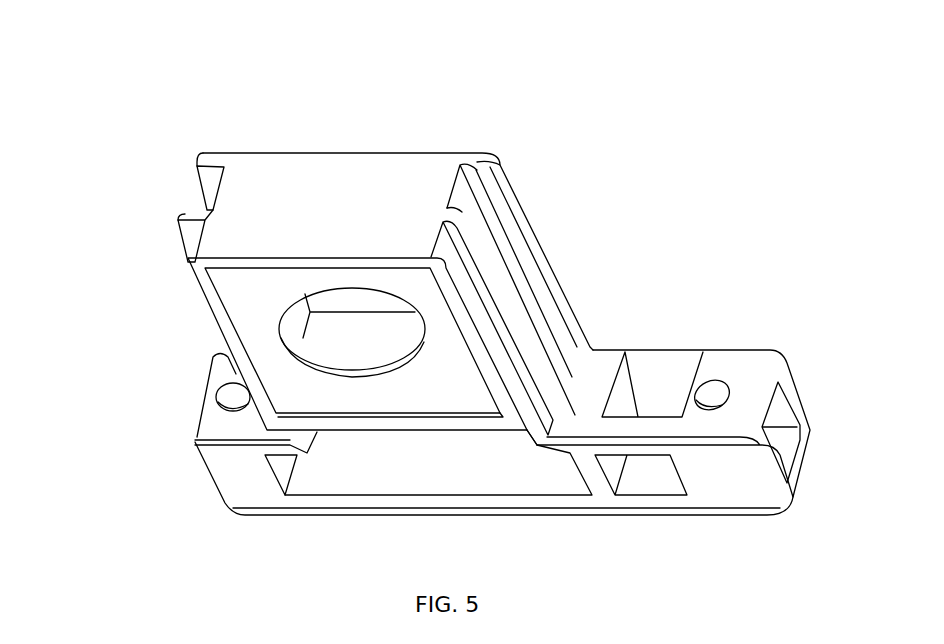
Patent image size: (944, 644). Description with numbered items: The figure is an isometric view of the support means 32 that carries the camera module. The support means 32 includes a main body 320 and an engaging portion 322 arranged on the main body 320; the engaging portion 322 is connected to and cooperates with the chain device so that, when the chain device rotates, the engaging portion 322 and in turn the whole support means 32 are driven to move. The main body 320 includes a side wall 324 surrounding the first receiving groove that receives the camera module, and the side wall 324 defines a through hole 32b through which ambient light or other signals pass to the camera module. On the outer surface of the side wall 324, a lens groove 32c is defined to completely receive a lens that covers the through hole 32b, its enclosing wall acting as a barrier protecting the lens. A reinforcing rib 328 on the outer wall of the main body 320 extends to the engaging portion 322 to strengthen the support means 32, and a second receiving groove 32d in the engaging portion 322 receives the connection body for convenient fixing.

The support means 32 is at (222, 53).
The main body 320 is at (362, 200).
The engaging portion 322 is at (740, 377).
The side wall 324 is at (497, 397).
The reinforcing rib 328 is at (543, 298).
The through hole 32b is at (342, 322).
The lens groove 32c is at (247, 331).
The second receiving groove 32d is at (648, 475).